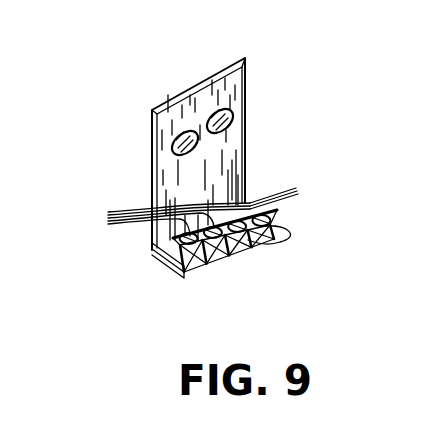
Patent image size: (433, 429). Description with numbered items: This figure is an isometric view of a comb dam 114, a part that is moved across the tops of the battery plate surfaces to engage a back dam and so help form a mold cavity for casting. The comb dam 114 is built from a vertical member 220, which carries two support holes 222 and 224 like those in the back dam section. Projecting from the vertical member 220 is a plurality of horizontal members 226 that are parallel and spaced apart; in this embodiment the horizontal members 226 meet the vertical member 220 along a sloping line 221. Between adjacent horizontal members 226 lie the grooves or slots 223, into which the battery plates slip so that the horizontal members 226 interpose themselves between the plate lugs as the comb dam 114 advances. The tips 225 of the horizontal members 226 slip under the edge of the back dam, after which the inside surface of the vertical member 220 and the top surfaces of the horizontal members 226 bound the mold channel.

The comb dam 114 is at (196, 72).
The vertical member 220 is at (233, 160).
The sloping line 221 is at (150, 226).
The support hole 222 is at (172, 151).
The grooves or slots 223 is at (292, 196).
The support hole 224 is at (227, 115).
The tips 225 is at (284, 234).
The horizontal members 226 is at (208, 273).